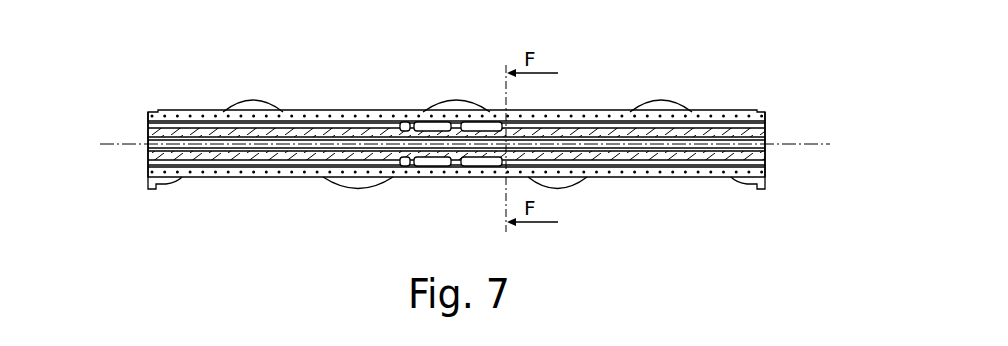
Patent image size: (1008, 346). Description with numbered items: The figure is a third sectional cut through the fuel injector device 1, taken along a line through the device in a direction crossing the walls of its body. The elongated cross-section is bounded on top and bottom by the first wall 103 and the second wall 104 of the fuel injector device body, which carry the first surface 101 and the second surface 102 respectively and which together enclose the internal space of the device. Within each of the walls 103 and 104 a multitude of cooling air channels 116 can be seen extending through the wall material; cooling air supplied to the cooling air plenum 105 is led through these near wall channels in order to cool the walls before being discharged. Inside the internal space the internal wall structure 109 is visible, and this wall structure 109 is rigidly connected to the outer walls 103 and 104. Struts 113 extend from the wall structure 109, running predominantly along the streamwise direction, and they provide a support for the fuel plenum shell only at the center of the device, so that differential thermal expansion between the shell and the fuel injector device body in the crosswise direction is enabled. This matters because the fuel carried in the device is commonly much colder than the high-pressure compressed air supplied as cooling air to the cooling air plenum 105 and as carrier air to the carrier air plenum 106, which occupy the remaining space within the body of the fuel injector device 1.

The fuel injector device 1 is at (630, 92).
The first surface 101 is at (362, 112).
The second surface 102 is at (642, 177).
The first wall 103 is at (297, 112).
The second wall 104 is at (260, 177).
The cooling air plenum 105 is at (765, 147).
The carrier air plenum 106 is at (767, 122).
The internal wall structure 109 is at (712, 133).
The struts 113 is at (505, 112).
The cooling air channels 116 is at (267, 112).